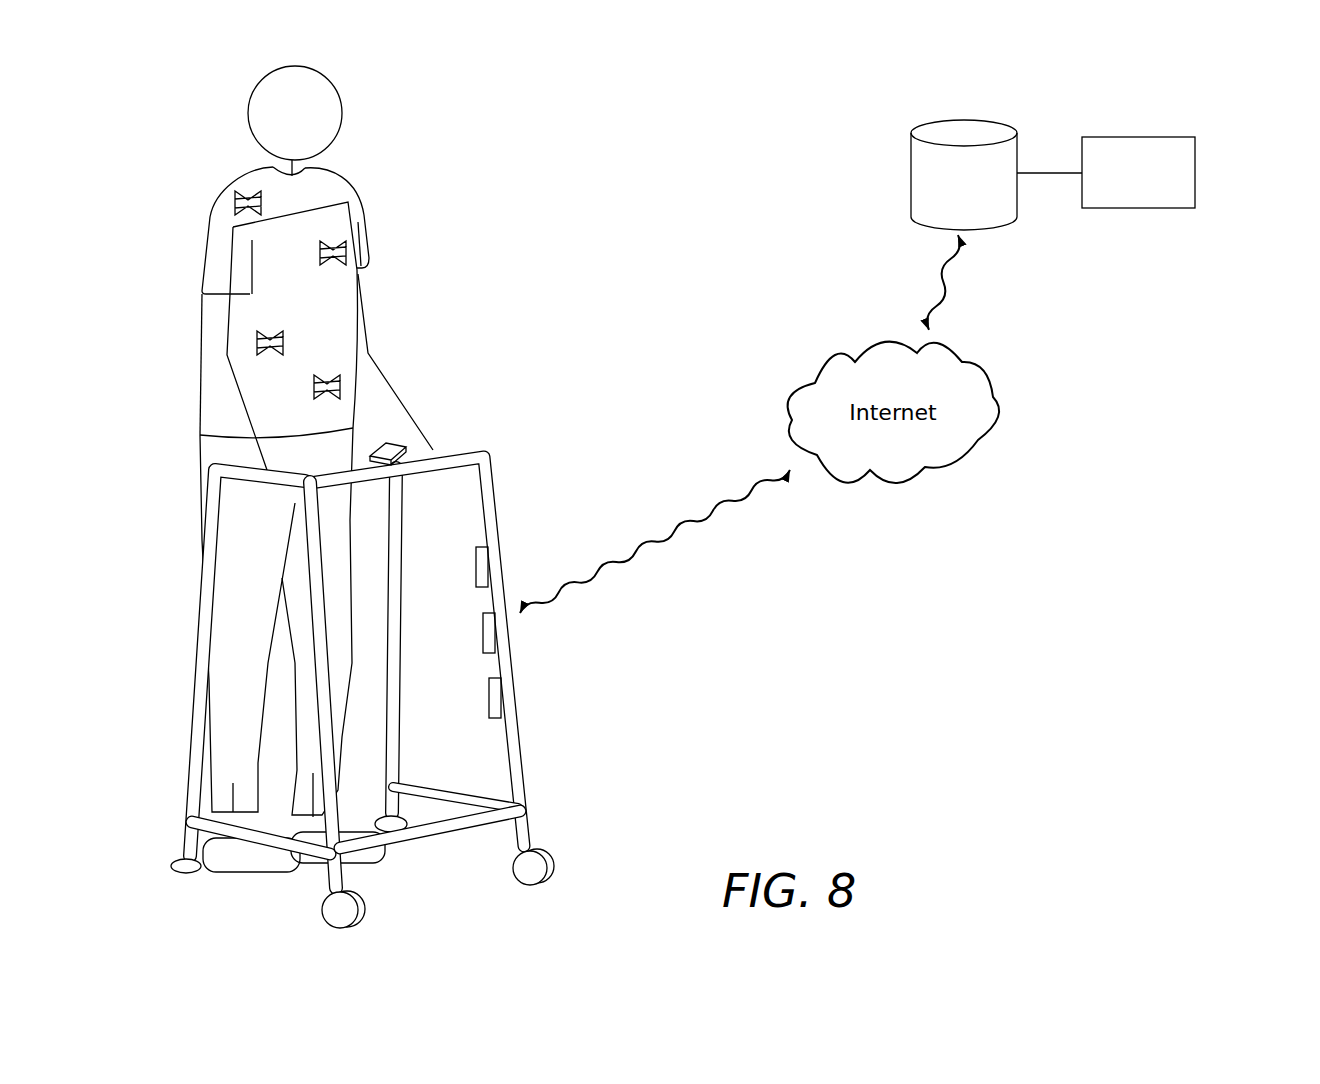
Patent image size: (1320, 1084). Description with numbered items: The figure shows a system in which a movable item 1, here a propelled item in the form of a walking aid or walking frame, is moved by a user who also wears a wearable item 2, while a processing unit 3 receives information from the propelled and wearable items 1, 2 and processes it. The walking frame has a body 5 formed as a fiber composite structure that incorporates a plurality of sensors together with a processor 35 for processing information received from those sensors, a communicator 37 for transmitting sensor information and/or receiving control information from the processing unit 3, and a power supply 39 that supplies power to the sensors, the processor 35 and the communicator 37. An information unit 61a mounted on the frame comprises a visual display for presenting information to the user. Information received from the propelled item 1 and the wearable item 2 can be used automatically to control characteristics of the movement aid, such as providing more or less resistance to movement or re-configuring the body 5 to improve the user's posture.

The movable item 1 is at (481, 642).
The wearable item 2 is at (172, 244).
The processing unit 3 is at (1230, 144).
The body 5 is at (527, 753).
The processor 35 is at (480, 567).
The communicator 37 is at (487, 631).
The power supply 39 is at (490, 697).
The information unit 61a is at (395, 440).